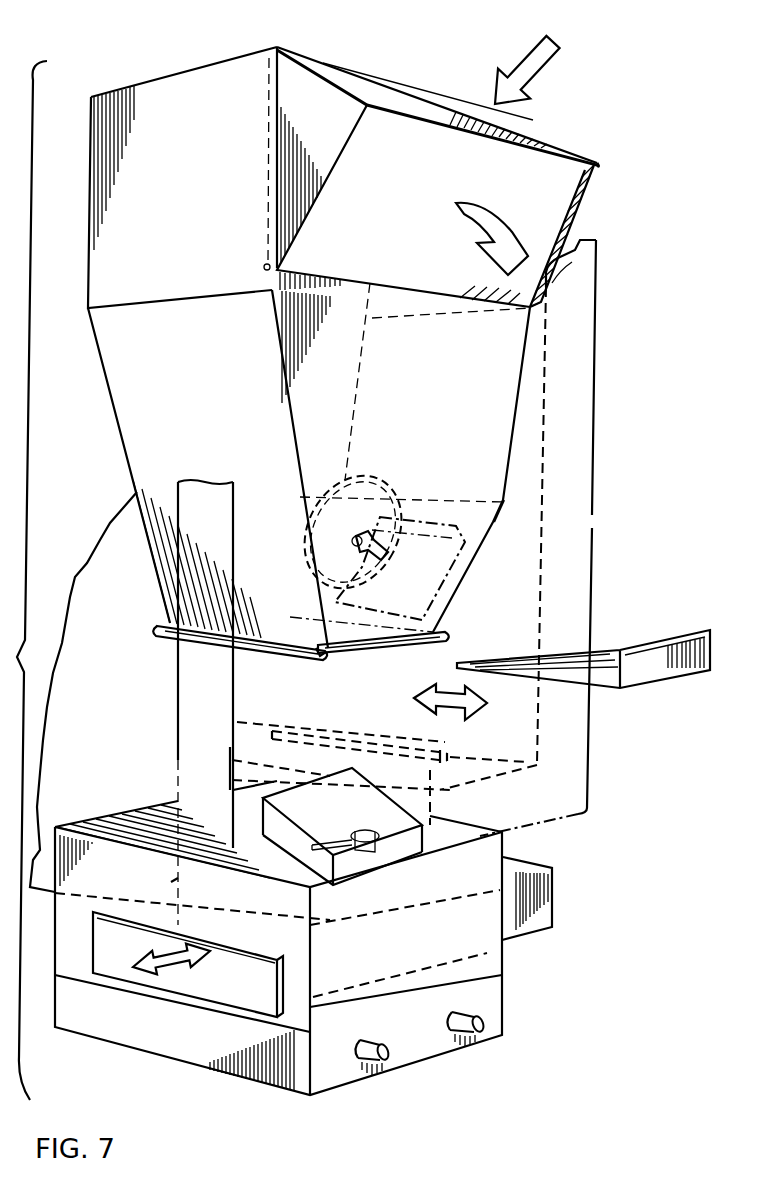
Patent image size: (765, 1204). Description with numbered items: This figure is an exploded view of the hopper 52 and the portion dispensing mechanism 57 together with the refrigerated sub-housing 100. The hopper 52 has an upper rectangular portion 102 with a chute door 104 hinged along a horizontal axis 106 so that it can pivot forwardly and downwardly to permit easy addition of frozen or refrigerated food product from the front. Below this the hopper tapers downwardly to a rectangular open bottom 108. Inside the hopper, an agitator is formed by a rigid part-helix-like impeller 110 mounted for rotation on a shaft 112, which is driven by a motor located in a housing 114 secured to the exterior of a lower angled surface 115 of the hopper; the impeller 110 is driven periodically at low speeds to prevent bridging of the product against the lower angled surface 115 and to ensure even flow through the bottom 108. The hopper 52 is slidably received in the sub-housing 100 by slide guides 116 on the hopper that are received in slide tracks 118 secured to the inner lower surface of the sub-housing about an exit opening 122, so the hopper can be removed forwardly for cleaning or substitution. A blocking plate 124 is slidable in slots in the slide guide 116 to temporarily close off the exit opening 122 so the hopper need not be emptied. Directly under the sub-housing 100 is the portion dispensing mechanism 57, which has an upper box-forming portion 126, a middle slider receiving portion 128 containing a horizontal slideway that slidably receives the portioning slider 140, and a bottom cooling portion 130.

The hopper 52 is at (174, 57).
The portion dispensing mechanism 57 is at (609, 825).
The refrigerated sub-housing 100 is at (570, 442).
The upper rectangular portion 102 is at (195, 211).
The chute door 104 is at (390, 211).
The horizontal axis 106 is at (352, 275).
The rectangular open bottom 108 is at (345, 657).
The impeller 110 is at (383, 480).
The shaft 112 is at (388, 570).
The housing 114 is at (440, 571).
The lower angled surface 115 is at (495, 525).
The slide guides 116 is at (448, 638).
The slide tracks 118 is at (230, 766).
The exit opening 122 is at (293, 757).
The blocking plate 124 is at (603, 658).
The upper box-forming portion 126 is at (528, 828).
The middle slider receiving portion 128 is at (557, 867).
The bottom cooling portion 130 is at (506, 967).
The portioning slider 140 is at (252, 992).